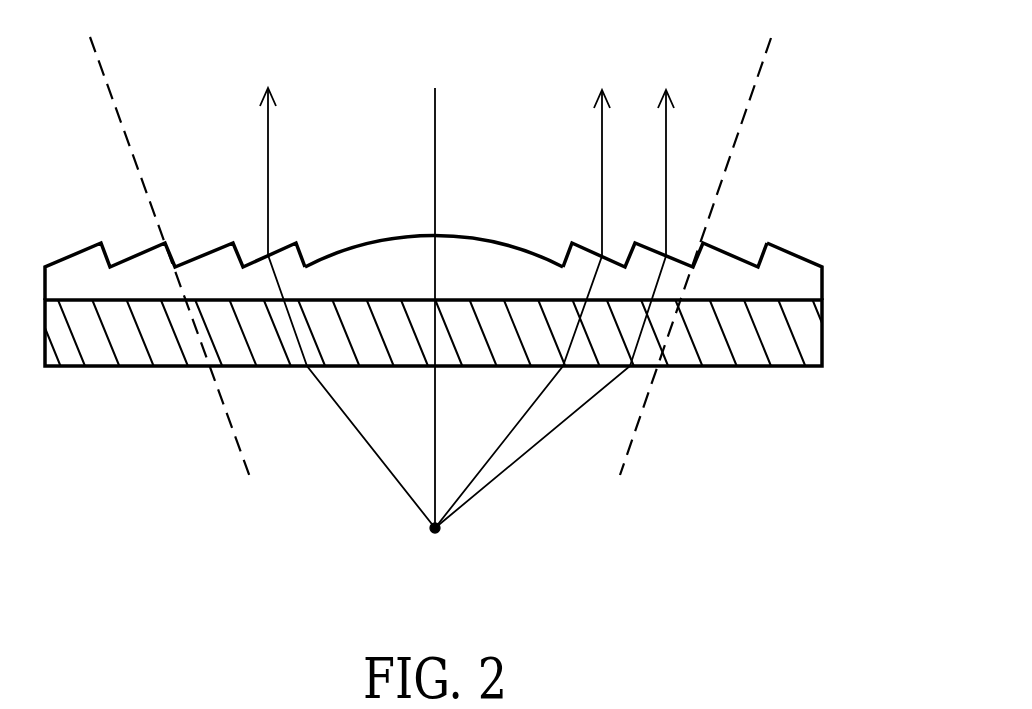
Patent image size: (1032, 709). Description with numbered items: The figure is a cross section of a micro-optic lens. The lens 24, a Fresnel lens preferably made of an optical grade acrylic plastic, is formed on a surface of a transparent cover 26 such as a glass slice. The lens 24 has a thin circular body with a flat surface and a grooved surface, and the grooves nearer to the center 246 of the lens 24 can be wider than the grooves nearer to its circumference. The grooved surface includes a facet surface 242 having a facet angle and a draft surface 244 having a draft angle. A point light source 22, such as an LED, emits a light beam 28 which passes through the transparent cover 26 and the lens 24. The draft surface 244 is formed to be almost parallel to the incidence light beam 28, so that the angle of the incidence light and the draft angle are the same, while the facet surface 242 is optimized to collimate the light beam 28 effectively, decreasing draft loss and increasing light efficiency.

The point light source 22 is at (435, 533).
The lens 24 is at (484, 223).
The transparent cover 26 is at (823, 332).
The light beam 28 is at (468, 288).
The facet surface 242 is at (790, 250).
The draft surface 244 is at (757, 258).
The center of the lens 246 is at (367, 241).